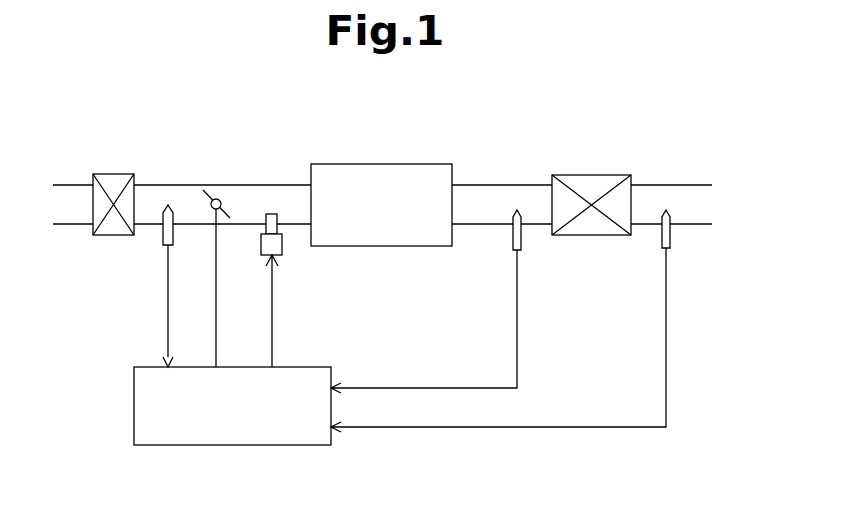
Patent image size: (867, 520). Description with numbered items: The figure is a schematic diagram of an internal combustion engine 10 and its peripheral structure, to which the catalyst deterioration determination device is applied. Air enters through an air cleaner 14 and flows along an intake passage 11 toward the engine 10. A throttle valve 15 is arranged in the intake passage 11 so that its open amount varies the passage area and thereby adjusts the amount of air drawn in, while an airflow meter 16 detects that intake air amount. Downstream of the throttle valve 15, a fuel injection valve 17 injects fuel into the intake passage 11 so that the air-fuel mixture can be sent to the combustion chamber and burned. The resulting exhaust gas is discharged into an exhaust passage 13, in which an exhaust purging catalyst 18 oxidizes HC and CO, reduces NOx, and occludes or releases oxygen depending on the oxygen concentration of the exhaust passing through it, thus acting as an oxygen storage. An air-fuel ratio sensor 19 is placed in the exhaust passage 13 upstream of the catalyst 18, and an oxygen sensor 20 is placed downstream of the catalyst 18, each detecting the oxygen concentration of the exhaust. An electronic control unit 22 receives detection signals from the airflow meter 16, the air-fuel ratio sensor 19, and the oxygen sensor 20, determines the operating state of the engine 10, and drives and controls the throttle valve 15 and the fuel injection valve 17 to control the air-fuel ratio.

The internal combustion engine 10 is at (342, 164).
The intake passage 11 is at (265, 184).
The exhaust passage 13 is at (472, 224).
The air cleaner 14 is at (103, 235).
The throttle valve 15 is at (205, 188).
The airflow meter 16 is at (162, 238).
The fuel injection valve 17 is at (282, 248).
The exhaust purging catalyst 18 is at (587, 175).
The air-fuel ratio sensor 19 is at (521, 237).
The oxygen sensor 20 is at (671, 237).
The electronic control unit 22 is at (134, 400).